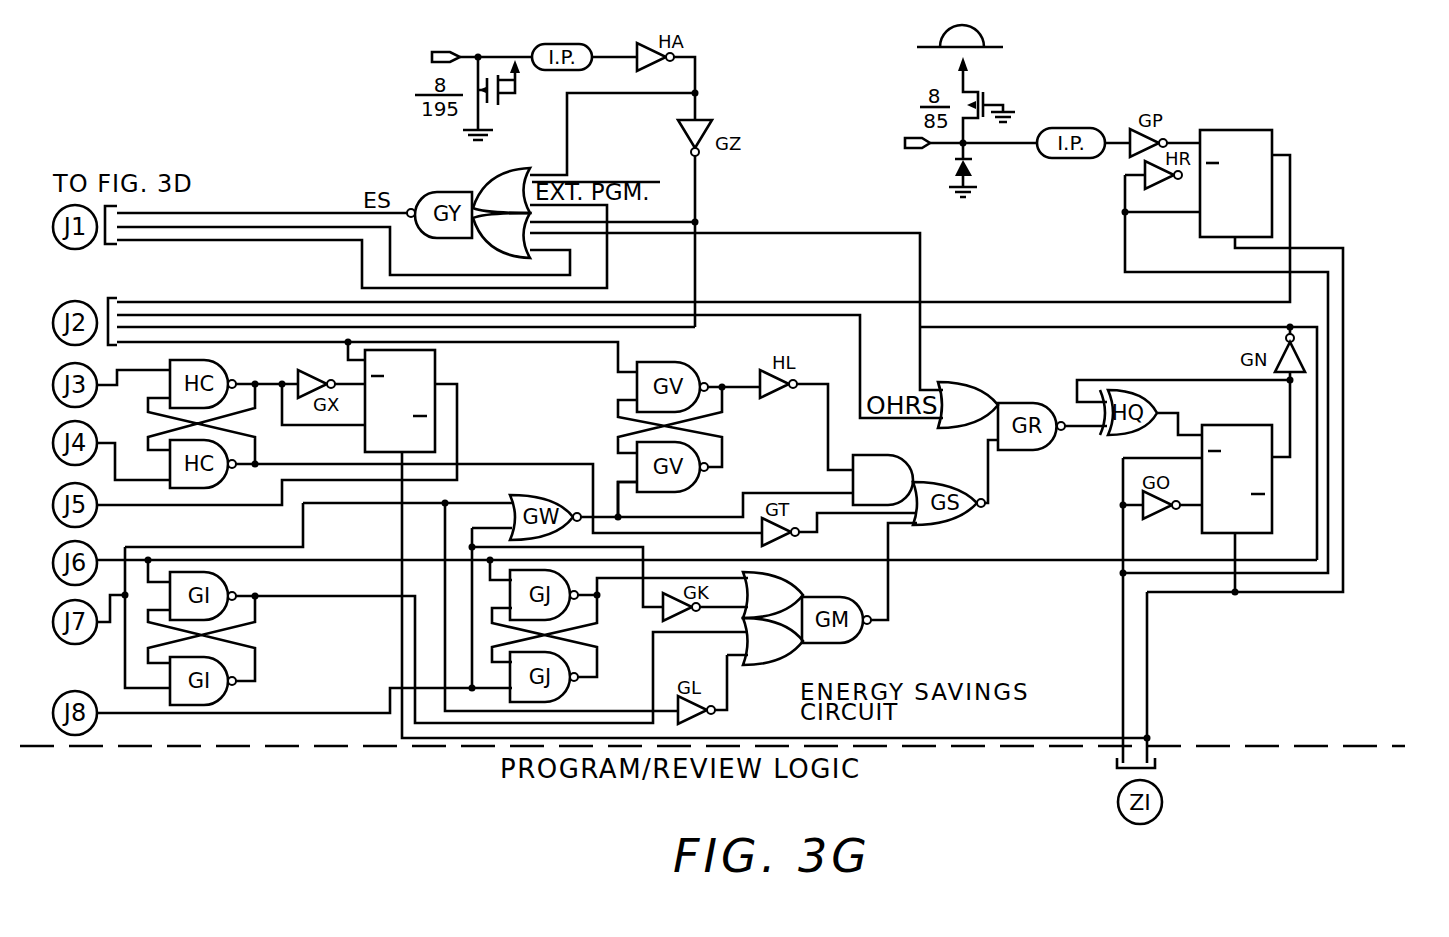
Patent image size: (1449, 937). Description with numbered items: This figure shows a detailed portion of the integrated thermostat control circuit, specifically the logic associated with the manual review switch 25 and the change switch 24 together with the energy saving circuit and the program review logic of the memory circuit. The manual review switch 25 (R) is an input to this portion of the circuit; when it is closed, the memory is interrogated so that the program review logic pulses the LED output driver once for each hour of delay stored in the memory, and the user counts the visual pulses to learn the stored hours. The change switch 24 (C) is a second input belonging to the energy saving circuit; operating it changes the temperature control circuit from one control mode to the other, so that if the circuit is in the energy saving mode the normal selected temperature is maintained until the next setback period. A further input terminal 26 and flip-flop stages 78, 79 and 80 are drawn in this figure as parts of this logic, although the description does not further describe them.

The change switch 24 is at (983, 32).
The manual review switch 25 is at (865, 143).
The FTRSEL input pin 26 is at (332, 58).
The flip-flop 78 is at (400, 401).
The flip-flop 79 is at (1237, 479).
The flip-flop 80 is at (1236, 183).